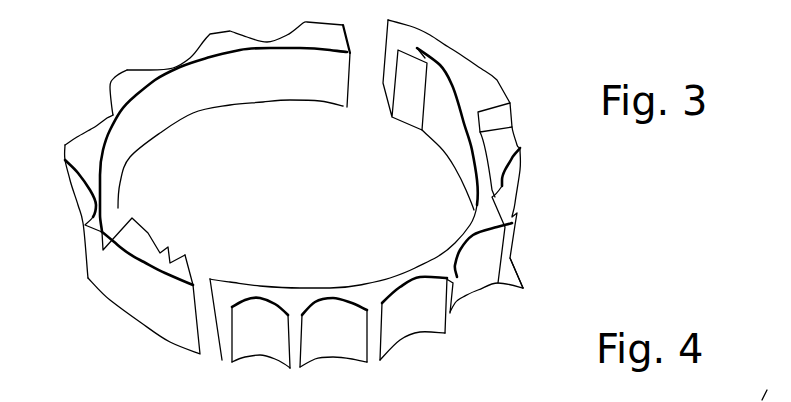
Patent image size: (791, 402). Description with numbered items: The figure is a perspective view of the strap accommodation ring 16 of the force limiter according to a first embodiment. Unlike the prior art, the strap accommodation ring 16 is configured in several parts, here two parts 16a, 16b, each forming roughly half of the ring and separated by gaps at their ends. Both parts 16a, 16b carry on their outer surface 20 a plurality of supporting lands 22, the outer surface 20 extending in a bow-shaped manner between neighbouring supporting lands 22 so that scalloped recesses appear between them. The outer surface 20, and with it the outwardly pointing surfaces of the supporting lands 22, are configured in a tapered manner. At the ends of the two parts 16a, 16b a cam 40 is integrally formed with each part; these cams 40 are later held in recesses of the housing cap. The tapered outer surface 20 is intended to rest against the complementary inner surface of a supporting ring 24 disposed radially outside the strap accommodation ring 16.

In FIG. 3, the strap accommodation ring 16 is at (311, 203).
In FIG. 3, the first part of the strap accommodation ring 16a is at (114, 118).
In FIG. 3, the second part of the strap accommodation ring 16b is at (502, 186).
In FIG. 3, the outer surface 20 is at (334, 334).
In FIG. 3, the supporting lands 22 is at (518, 283).
In FIG. 3, the cam 40 is at (177, 270).
In FIG. 4, the supporting ring 24 is at (776, 388).